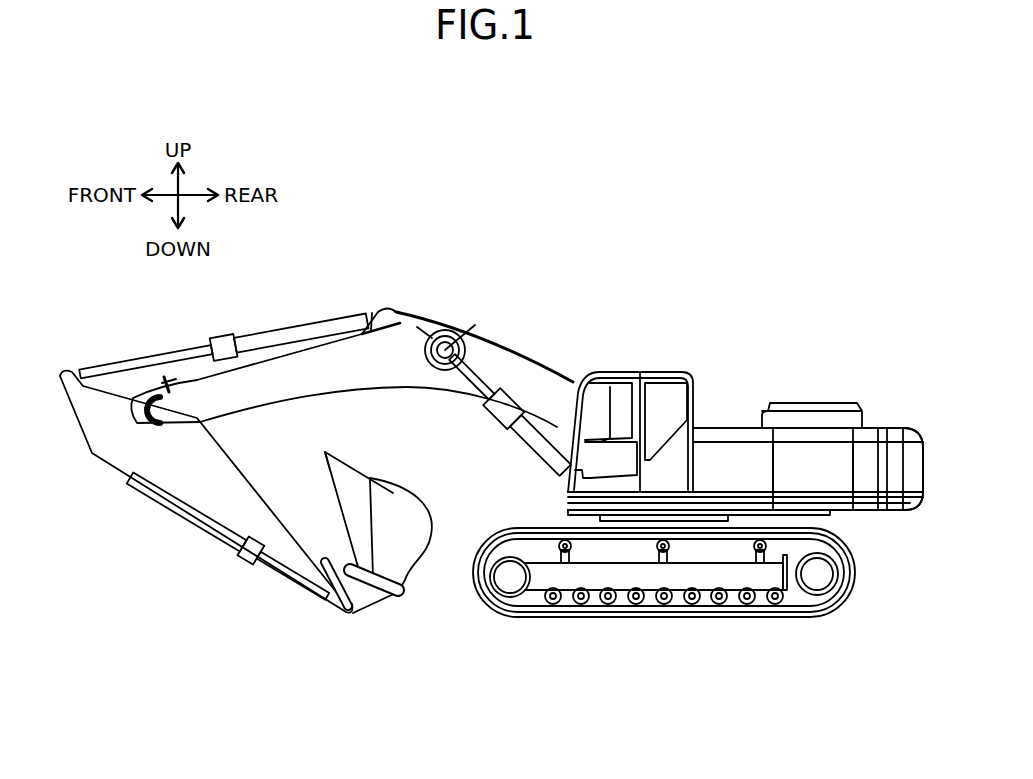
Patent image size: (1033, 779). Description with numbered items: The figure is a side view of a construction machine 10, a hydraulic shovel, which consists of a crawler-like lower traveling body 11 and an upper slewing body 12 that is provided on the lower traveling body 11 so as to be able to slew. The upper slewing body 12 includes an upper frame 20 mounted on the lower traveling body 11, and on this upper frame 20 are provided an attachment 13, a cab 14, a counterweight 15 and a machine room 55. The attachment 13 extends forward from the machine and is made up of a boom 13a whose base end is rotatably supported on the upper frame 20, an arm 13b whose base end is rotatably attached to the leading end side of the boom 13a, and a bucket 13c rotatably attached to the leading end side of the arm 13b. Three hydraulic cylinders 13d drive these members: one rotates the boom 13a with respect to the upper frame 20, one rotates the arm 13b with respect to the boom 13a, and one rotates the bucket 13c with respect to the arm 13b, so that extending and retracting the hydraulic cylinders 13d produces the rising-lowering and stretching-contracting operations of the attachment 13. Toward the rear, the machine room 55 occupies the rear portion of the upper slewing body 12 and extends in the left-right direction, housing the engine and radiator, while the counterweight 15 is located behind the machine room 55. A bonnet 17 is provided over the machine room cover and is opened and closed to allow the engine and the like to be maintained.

The construction machine 10 is at (582, 253).
The lower traveling body 11 is at (707, 616).
The upper slewing body 12 is at (720, 343).
The attachment 13 is at (482, 298).
The boom 13a is at (283, 367).
The arm 13b is at (125, 462).
The bucket 13c is at (392, 494).
The hydraulic cylinder 13d is at (328, 325).
The cab 14 is at (643, 372).
The counterweight 15 is at (903, 436).
The bonnet 17 is at (812, 400).
The upper frame 20 is at (570, 503).
The machine room 55 is at (828, 487).